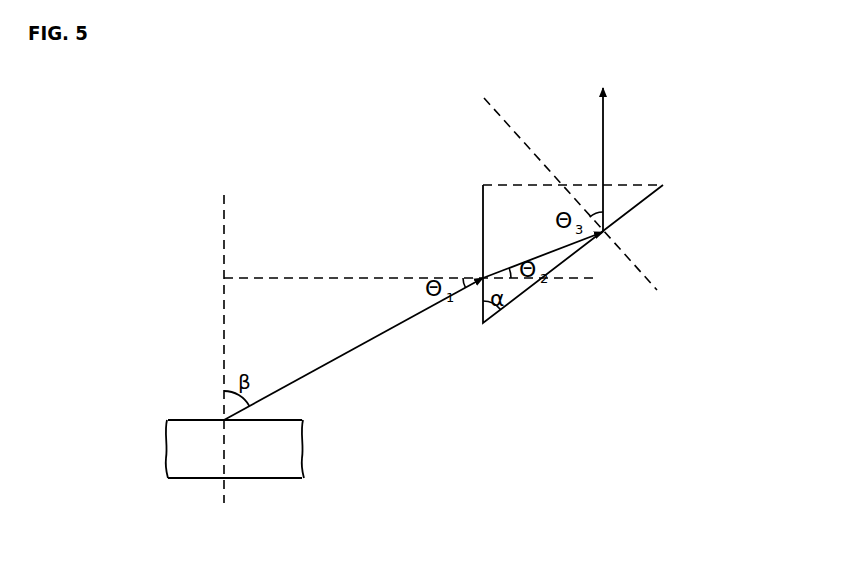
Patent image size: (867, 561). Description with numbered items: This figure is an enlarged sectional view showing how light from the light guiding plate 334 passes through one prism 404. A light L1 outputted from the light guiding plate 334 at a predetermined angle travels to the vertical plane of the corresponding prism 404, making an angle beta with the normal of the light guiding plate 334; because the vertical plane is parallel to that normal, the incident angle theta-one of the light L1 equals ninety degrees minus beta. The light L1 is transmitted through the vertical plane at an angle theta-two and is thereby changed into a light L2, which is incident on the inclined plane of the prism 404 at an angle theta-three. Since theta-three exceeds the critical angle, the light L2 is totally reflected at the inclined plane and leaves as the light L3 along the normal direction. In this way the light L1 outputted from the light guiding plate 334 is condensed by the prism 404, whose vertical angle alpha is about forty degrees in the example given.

The light guiding plate 334 is at (300, 447).
The prism 404 is at (628, 205).
The light L1 is at (353, 349).
The light L2 is at (543, 251).
The reflected output light beam L3 is at (622, 160).